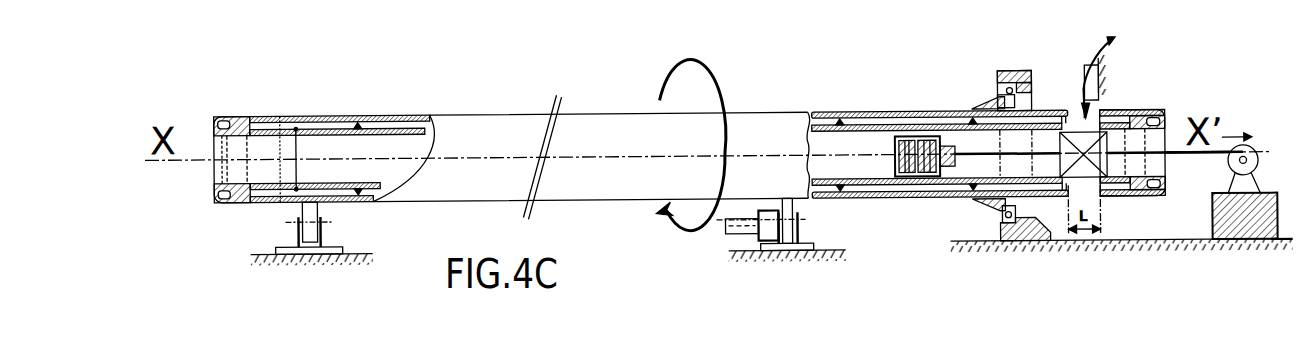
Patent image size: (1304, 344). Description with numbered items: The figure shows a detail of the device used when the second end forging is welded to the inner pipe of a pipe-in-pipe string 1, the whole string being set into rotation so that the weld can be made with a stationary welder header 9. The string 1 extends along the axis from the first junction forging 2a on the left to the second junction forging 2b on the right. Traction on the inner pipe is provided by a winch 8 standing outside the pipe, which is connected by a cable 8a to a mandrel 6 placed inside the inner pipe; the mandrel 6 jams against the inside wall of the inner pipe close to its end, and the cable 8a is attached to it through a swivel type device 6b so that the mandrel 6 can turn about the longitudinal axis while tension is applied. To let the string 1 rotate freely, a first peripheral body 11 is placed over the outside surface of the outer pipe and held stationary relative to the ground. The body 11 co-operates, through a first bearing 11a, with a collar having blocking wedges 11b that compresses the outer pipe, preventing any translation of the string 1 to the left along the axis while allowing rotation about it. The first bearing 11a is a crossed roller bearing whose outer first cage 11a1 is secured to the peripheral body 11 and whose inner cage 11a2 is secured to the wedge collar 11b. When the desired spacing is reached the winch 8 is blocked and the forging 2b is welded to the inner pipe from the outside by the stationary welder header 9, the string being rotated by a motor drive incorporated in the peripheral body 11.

The PiP type pipe 1 is at (488, 97).
The first junction forging 2a is at (206, 207).
The second junction forging 2b is at (1172, 102).
The mandrel 6 is at (905, 117).
The swivel type device 6b is at (948, 185).
The winch 8 is at (1258, 162).
The cable 8a is at (1200, 164).
The machining tool 9 is at (1108, 110).
The first peripheral body 11 is at (1032, 84).
The first bearing 11a is at (945, 40).
The outer first cage 11a1 is at (1008, 77).
The inner cage 11a2 is at (1003, 102).
The collar having blocking wedges 11b is at (972, 110).